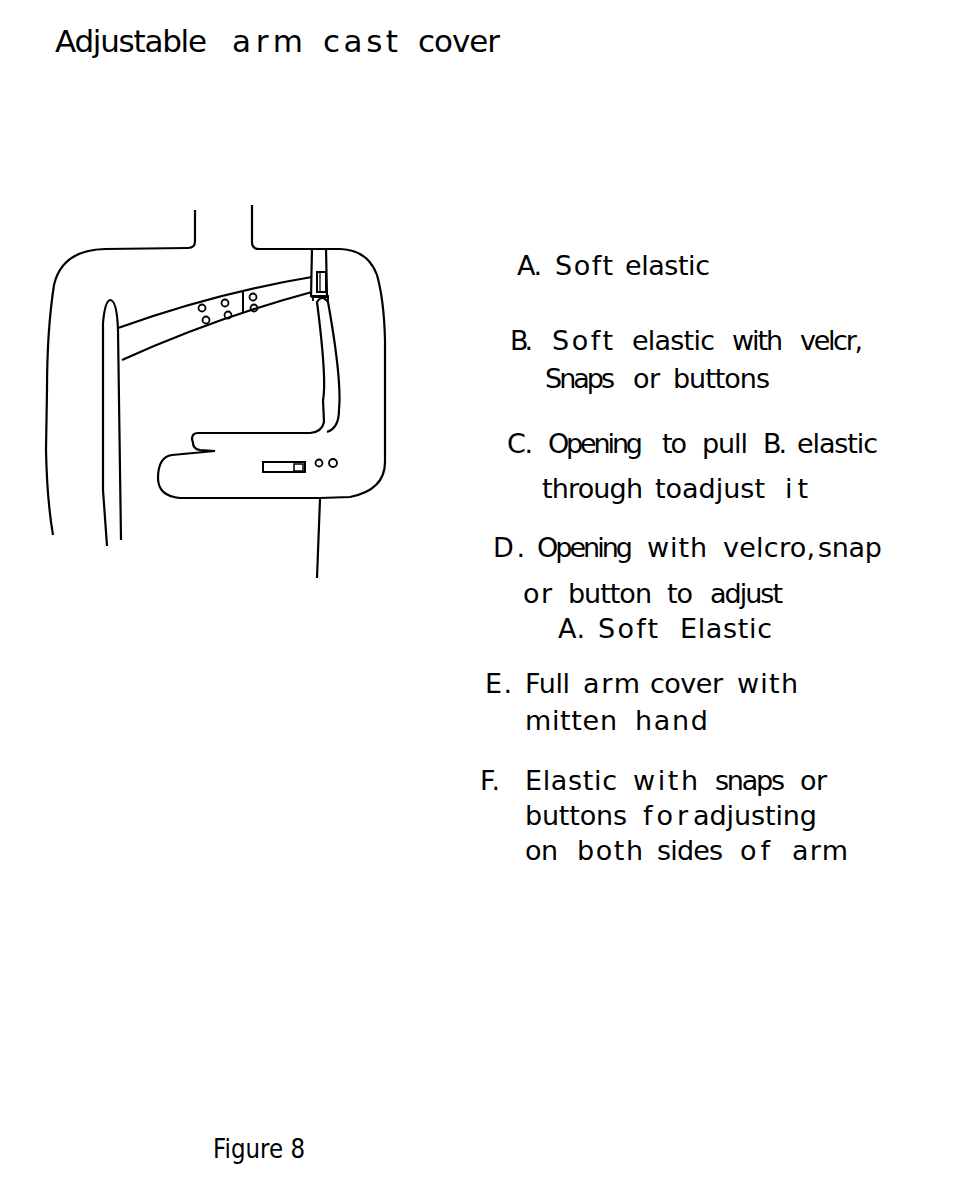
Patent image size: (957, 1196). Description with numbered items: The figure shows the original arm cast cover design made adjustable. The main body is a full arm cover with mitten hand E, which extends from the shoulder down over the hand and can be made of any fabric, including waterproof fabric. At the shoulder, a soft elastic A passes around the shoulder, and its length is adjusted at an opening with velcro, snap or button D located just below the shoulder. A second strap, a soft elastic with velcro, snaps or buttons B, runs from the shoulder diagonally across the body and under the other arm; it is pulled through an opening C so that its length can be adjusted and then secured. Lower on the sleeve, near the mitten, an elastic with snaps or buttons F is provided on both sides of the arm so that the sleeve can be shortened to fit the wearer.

The soft elastic A is at (320, 261).
The soft elastic with velcro, snaps or buttons B is at (215, 315).
The opening to pull B elastic through C is at (333, 279).
The opening with velcro, snap or button D is at (313, 313).
The full arm cover with mitten hand E is at (287, 412).
The elastic with snaps or buttons F is at (300, 455).